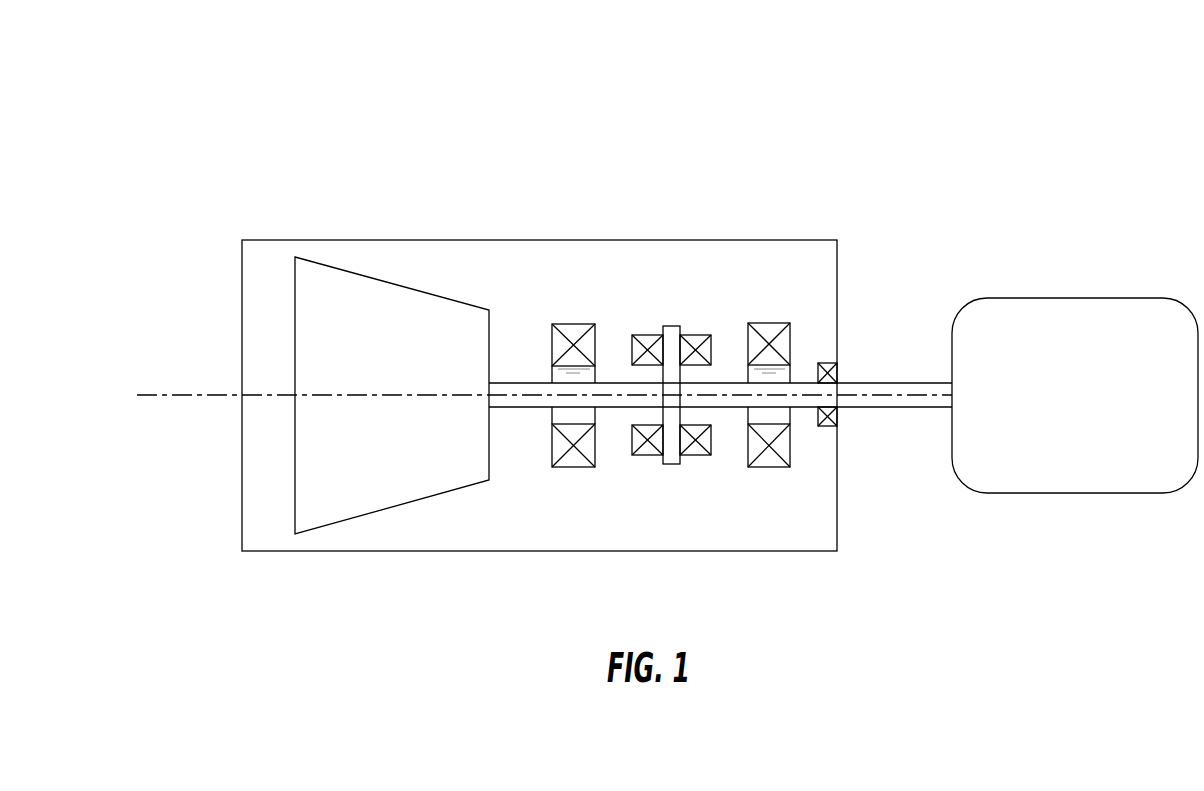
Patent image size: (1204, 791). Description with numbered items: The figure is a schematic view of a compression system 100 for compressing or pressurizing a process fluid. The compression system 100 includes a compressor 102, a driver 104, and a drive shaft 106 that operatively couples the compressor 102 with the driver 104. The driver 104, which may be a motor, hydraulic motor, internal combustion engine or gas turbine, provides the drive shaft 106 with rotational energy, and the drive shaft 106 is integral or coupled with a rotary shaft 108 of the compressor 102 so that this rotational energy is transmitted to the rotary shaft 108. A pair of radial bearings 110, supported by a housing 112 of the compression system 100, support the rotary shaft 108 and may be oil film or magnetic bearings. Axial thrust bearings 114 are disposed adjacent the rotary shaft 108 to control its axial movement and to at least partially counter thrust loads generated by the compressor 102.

The compression system 100 is at (222, 85).
The compressor 102 is at (414, 409).
The driver 104 is at (1097, 409).
The drive shaft 106 is at (887, 396).
The rotary shaft 108 is at (533, 393).
The radial bearings 110 is at (573, 323).
The housing 112 is at (675, 240).
The axial thrust bearings 114 is at (695, 334).